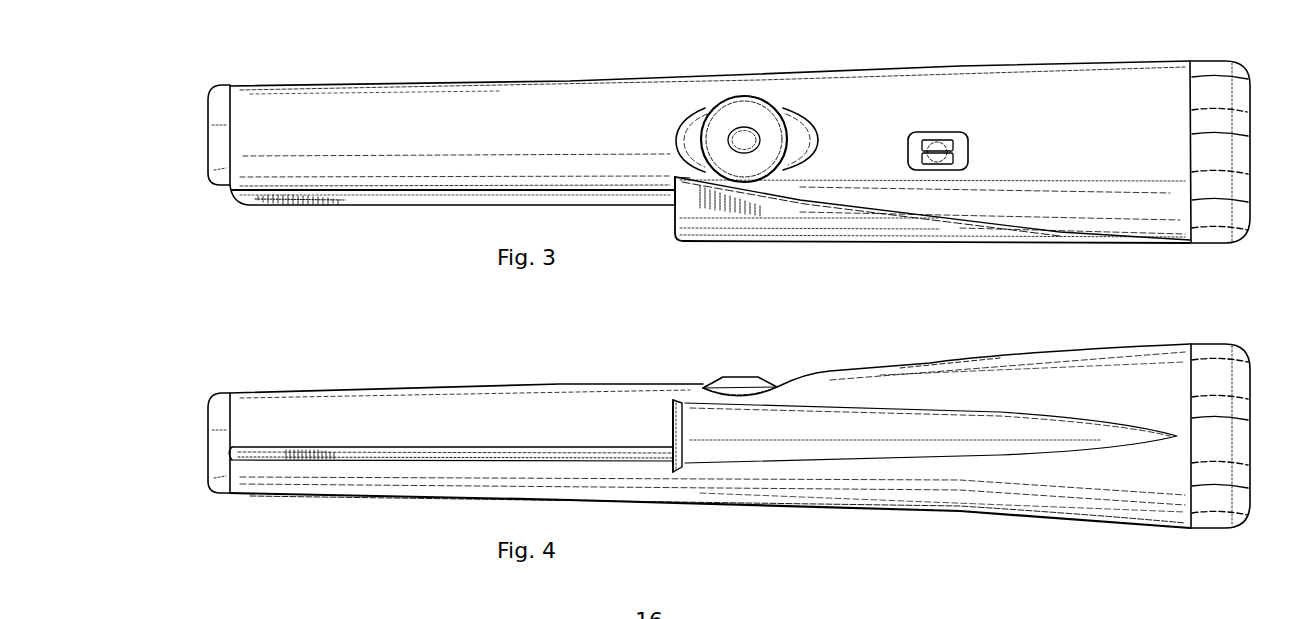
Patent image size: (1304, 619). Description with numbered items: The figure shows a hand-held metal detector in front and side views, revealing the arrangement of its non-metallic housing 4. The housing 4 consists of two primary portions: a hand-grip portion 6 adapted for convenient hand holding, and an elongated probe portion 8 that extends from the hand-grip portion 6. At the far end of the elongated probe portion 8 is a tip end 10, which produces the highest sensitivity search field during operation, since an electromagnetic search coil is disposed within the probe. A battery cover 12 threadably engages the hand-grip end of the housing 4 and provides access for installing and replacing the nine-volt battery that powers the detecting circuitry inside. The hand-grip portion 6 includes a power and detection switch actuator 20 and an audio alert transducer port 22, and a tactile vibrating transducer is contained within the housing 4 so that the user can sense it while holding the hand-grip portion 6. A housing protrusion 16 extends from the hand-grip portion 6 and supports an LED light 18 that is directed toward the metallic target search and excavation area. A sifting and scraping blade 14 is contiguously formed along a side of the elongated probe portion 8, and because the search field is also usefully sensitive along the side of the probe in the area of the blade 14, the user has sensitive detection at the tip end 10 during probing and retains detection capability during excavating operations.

In FIG. 3, the housing 4 is at (675, 77).
In FIG. 4, the housing 4 is at (553, 385).
In FIG. 3, the hand-grip portion 6 is at (1193, 52).
In FIG. 3, the elongated probe portion 8 is at (662, 70).
In FIG. 3, the tip end 10 is at (206, 143).
In FIG. 4, the tip end 10 is at (207, 445).
In FIG. 3, the battery cover 12 is at (1250, 130).
In FIG. 4, the battery cover 12 is at (1250, 410).
In FIG. 3, the sifting and scraping blade 14 is at (297, 207).
In FIG. 4, the sifting and scraping blade 14 is at (280, 450).
In FIG. 3, the housing protrusion 16 is at (703, 242).
In FIG. 4, the housing protrusion 16 is at (684, 401).
In FIG. 3, the LED light 18 is at (674, 223).
In FIG. 4, the LED light 18 is at (675, 437).
In FIG. 3, the power and detection switch actuator 20 is at (723, 99).
In FIG. 4, the power and detection switch actuator 20 is at (732, 378).
In FIG. 3, the audio alert transducer 22 is at (937, 133).
In FIG. 4, the audio alert transducer 22 is at (928, 363).